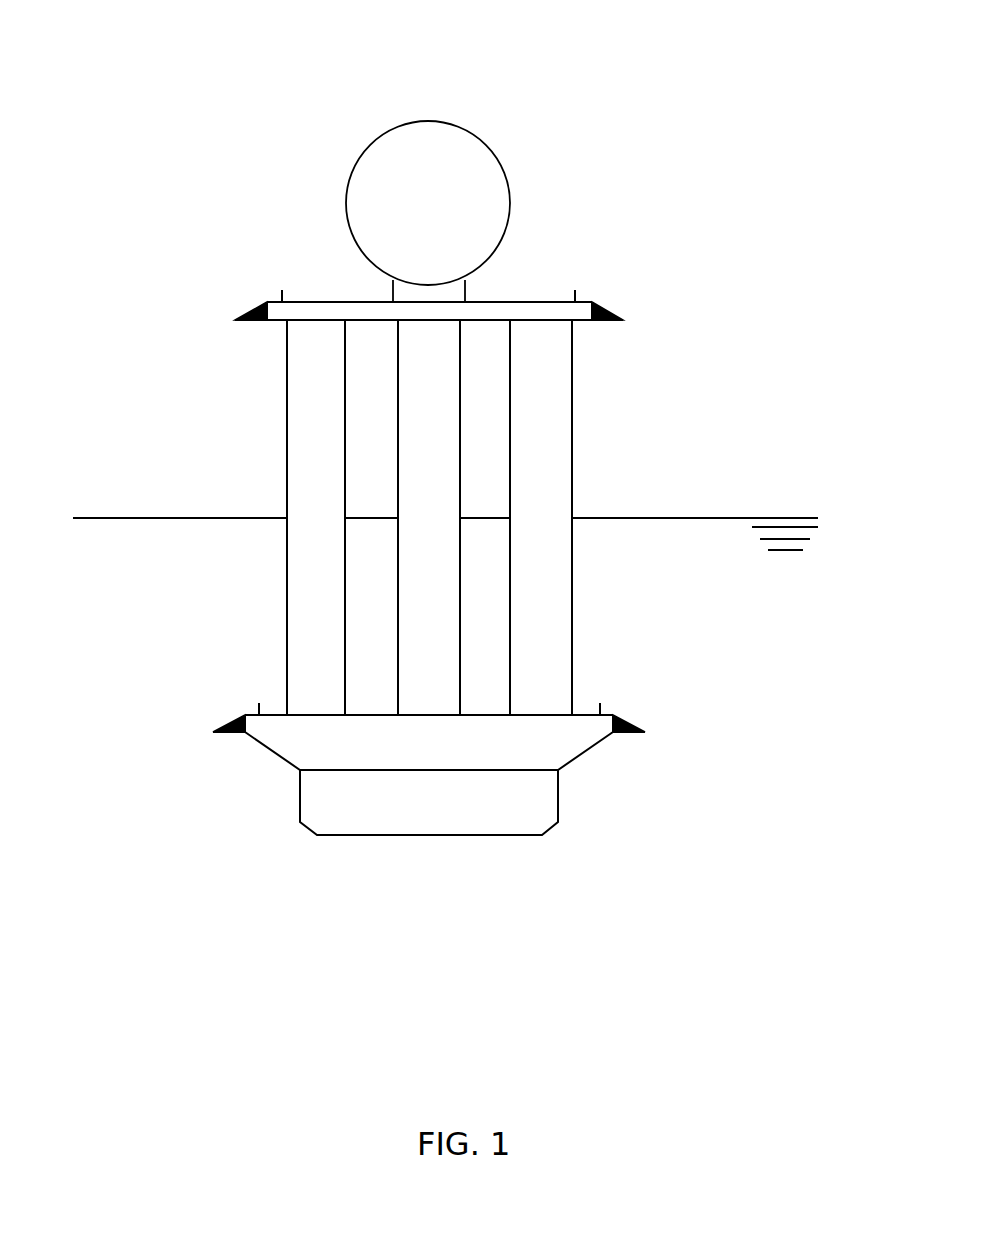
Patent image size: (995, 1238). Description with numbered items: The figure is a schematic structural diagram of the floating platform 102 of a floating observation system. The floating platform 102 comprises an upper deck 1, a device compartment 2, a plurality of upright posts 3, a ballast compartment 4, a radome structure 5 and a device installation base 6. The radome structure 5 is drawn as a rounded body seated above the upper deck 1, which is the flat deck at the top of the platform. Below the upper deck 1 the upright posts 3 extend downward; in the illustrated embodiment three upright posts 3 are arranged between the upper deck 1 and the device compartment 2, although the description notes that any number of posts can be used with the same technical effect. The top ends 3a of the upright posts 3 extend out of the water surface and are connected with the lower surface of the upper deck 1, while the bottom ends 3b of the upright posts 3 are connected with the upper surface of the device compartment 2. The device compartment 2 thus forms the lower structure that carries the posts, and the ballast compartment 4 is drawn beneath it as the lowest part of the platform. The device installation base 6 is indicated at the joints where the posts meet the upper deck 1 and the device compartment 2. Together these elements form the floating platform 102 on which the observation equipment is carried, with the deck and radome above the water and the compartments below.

The upper deck 1 is at (503, 313).
The device compartment 2 is at (562, 752).
The upright post 3 is at (535, 500).
The top end of upright post 3a is at (285, 321).
The bottom end of upright post 3b is at (285, 715).
The ballast compartment 4 is at (533, 812).
The radome structure 5 is at (480, 202).
The device installation base 6 is at (282, 300).
The floating platform 102 is at (703, 449).